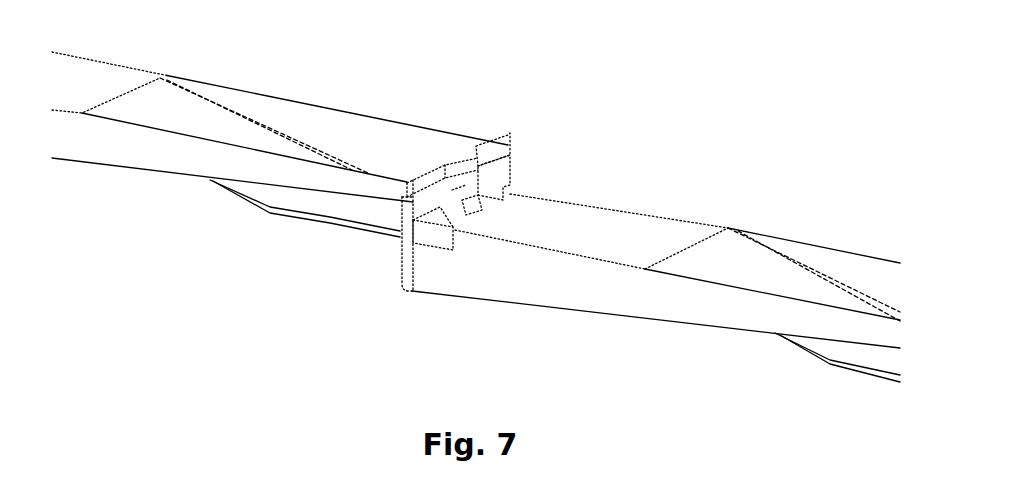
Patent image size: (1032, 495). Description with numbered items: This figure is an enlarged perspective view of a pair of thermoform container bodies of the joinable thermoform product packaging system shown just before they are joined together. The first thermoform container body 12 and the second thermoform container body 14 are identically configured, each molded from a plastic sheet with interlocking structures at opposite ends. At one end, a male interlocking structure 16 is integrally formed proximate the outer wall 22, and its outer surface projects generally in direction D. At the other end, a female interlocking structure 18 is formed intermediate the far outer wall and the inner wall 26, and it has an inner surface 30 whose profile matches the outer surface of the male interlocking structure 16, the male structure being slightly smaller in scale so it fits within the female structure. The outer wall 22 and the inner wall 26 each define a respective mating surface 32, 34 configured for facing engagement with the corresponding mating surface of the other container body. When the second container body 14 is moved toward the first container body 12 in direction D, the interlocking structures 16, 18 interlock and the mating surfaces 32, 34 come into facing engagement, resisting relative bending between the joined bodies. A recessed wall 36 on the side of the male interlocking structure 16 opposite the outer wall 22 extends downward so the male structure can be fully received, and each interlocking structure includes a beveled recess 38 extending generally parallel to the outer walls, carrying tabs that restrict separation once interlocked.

The first thermoform container body 12 is at (820, 250).
The second thermoform container body 14 is at (202, 82).
The male interlocking structure 16 is at (503, 192).
The female interlocking structure 18 is at (422, 173).
The outer wall 22 is at (405, 252).
The inner wall 26 is at (450, 198).
The inner surface 30 is at (510, 133).
The mating surface 32 is at (395, 278).
The mating surface 34 is at (458, 197).
The recessed wall 36 is at (433, 227).
The beveled recess 38 is at (464, 137).
The direction D is at (370, 290).